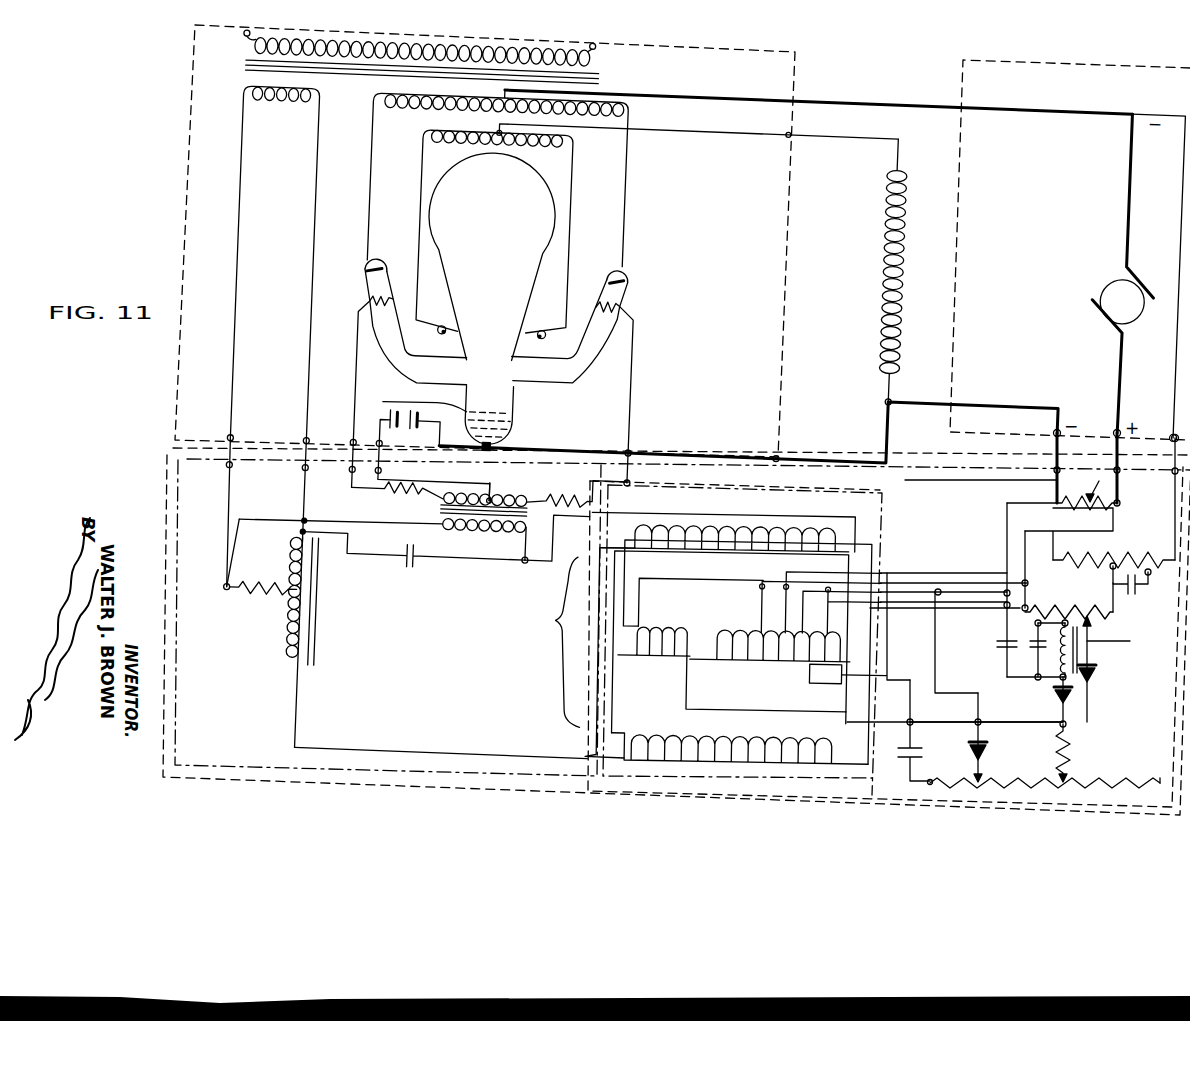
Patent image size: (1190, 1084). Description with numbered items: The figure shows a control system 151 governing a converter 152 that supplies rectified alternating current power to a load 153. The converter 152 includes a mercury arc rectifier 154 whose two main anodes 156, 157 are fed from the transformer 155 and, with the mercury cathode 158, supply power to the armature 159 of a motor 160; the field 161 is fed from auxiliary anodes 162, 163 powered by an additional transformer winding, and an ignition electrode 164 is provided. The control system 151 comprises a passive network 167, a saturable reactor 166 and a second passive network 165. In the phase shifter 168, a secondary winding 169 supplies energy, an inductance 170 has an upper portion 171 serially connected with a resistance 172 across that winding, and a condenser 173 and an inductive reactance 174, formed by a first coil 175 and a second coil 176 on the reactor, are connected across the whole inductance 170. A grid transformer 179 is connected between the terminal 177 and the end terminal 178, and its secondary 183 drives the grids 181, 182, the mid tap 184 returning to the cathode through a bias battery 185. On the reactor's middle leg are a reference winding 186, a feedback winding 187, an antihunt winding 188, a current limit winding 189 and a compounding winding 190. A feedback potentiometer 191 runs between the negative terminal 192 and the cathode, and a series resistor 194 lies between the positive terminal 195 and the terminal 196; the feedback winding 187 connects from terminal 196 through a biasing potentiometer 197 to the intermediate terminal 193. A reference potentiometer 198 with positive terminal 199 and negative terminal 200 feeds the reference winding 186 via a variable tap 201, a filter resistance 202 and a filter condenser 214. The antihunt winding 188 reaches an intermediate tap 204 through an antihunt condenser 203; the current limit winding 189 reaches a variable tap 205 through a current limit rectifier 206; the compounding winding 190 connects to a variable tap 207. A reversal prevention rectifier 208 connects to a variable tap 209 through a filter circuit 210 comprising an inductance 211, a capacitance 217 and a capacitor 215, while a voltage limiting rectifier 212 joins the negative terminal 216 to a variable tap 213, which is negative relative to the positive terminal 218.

The control system 151 is at (1180, 666).
The converter 152 is at (797, 74).
The load 153 is at (1168, 78).
The mercury arc rectifier 154 is at (540, 198).
The transformer 155 is at (636, 79).
The main anode 156 is at (370, 272).
The main anode 157 is at (608, 274).
The mercury cathode 158 is at (512, 436).
The armature 159 is at (1137, 300).
The motor 160 is at (1056, 285).
The field 161 is at (893, 240).
The auxiliary anode 162 is at (437, 336).
The auxiliary anode 163 is at (539, 336).
The ignition electrode 164 is at (476, 412).
The second passive network 165 is at (1170, 714).
The saturable reactor 166 is at (879, 496).
The passive network 167 is at (178, 726).
The phase shifter 168 is at (375, 619).
The secondary winding 169 is at (289, 120).
The inductance 170 is at (300, 646).
The upper portion 171 is at (301, 572).
The resistance 172 is at (255, 610).
The condenser 173 is at (420, 572).
The inductive reactance 174 is at (560, 632).
The first coil 175 is at (680, 527).
The second coil 176 is at (633, 742).
The terminal 177 is at (528, 570).
The end terminal 178 is at (231, 607).
The grid transformer 179 is at (429, 524).
The grid 181 is at (362, 312).
The grid 182 is at (617, 306).
The secondary 183 is at (577, 492).
The mid tap 184 is at (490, 506).
The bias battery 185 is at (388, 428).
The reference winding 186 is at (657, 628).
The feedback winding 187 is at (722, 630).
The antihunt winding 188 is at (770, 662).
The current limit winding 189 is at (800, 662).
The compounding winding 190 is at (827, 653).
The feedback potentiometer 191 is at (1110, 556).
The negative terminal 192 is at (1173, 434).
The intermediate terminal 193 is at (1110, 575).
The series resistor 194 is at (1069, 533).
The positive terminal 195 is at (1114, 431).
The terminal 196 is at (1054, 435).
The biasing potentiometer 197 is at (1082, 612).
The reference potentiometer 198 is at (1076, 784).
The positive terminal 199 is at (930, 778).
The negative terminal 200 is at (1158, 780).
The variable tap 201 is at (1061, 781).
The filter resistance 202 is at (1070, 732).
The antihunt condenser 203 is at (1149, 576).
The intermediate tap 204 is at (1134, 586).
The variable tap 205 is at (980, 781).
The current limit rectifier 206 is at (982, 744).
The variable tap 207 is at (1063, 471).
The reversal prevention rectifier 208 is at (1052, 696).
The variable tap 209 is at (1038, 628).
The filter circuit 210 is at (1135, 667).
The inductance 211 is at (1127, 639).
The voltage limiting rectifier 212 is at (1100, 685).
The variable tap 213 is at (1090, 622).
The filter condenser 214 is at (932, 687).
The capacitor 215 is at (997, 650).
The negative terminal 216 is at (1058, 722).
The capacitance 217 is at (1040, 650).
The positive terminal 218 is at (1021, 590).